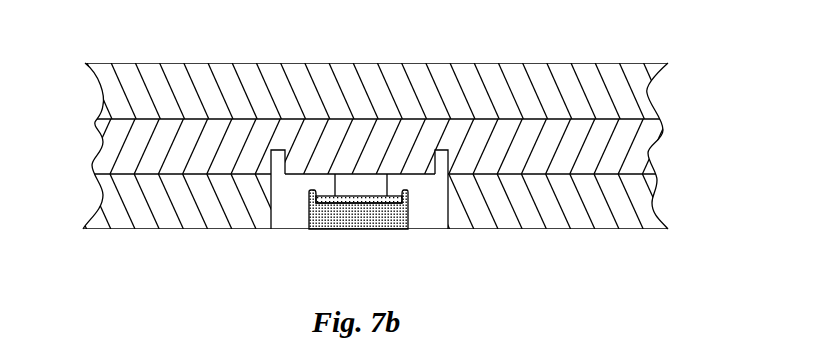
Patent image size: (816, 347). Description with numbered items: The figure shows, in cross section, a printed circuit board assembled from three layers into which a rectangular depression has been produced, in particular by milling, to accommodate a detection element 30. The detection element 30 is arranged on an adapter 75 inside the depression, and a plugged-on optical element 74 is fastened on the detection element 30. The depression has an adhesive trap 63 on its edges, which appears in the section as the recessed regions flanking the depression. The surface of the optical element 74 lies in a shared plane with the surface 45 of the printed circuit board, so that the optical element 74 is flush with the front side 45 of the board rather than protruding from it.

The front side 45 is at (490, 230).
The adhesive trap 63 is at (278, 162).
The optical element 74 is at (337, 218).
The detection element 30 is at (360, 202).
The adapter 75 is at (363, 185).